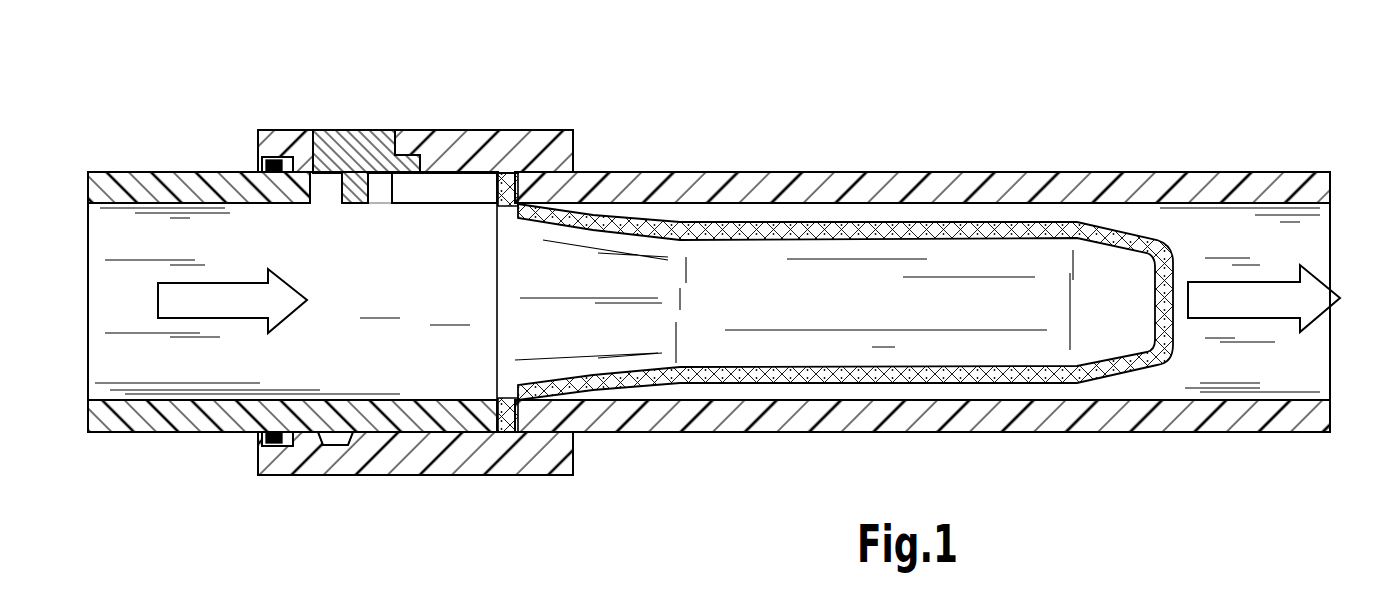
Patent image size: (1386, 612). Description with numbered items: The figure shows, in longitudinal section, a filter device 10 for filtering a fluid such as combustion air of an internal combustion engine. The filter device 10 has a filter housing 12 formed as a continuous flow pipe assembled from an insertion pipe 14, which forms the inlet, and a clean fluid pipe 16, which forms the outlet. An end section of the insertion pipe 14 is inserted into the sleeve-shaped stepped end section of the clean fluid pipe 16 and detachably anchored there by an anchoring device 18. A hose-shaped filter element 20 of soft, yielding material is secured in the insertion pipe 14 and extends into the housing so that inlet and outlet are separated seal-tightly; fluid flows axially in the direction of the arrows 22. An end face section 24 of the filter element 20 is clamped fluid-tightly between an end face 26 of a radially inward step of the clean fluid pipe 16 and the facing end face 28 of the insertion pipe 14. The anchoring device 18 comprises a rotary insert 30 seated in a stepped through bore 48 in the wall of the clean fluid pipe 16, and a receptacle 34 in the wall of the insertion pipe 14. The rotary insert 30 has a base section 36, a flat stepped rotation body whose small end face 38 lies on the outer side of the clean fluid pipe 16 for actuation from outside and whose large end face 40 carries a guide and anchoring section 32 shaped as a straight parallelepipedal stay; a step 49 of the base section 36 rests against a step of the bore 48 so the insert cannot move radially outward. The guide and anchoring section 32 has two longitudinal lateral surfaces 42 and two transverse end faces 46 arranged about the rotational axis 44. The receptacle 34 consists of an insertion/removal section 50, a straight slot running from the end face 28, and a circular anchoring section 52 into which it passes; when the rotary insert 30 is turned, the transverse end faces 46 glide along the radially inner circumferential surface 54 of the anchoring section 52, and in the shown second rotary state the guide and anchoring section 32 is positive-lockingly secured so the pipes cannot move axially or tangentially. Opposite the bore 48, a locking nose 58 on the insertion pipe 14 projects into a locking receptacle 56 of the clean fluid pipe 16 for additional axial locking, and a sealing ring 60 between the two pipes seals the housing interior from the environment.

The filter device 10 is at (178, 474).
The filter housing 12 is at (578, 128).
The insertion pipe 14 is at (148, 190).
The clean fluid pipe 16 is at (1210, 185).
The anchoring device 18 is at (282, 148).
The hose-shaped filter element 20 is at (1048, 222).
The arrows 22 is at (176, 298).
The end face section 24 is at (504, 418).
The end face 26 is at (522, 414).
The end face 28 is at (493, 410).
The rotary insert 30 is at (393, 124).
The guide and anchoring section 32 is at (383, 200).
The receptacle 34 is at (400, 183).
The base section 36 is at (383, 130).
The small end face 38 is at (332, 128).
The large end face 40 is at (321, 210).
The longitudinal lateral surfaces 42 is at (352, 204).
The rotational axis 44 is at (355, 215).
The transverse end faces 46 is at (373, 210).
The through bore 48 is at (405, 142).
The step 49 is at (300, 152).
The insertion/removal section 50 is at (477, 186).
The anchoring section 52 is at (342, 200).
The radially inner circumferential surface 54 is at (305, 182).
The locking receptacle 56 is at (347, 442).
The locking nose 58 is at (332, 450).
The sealing ring 60 is at (264, 164).